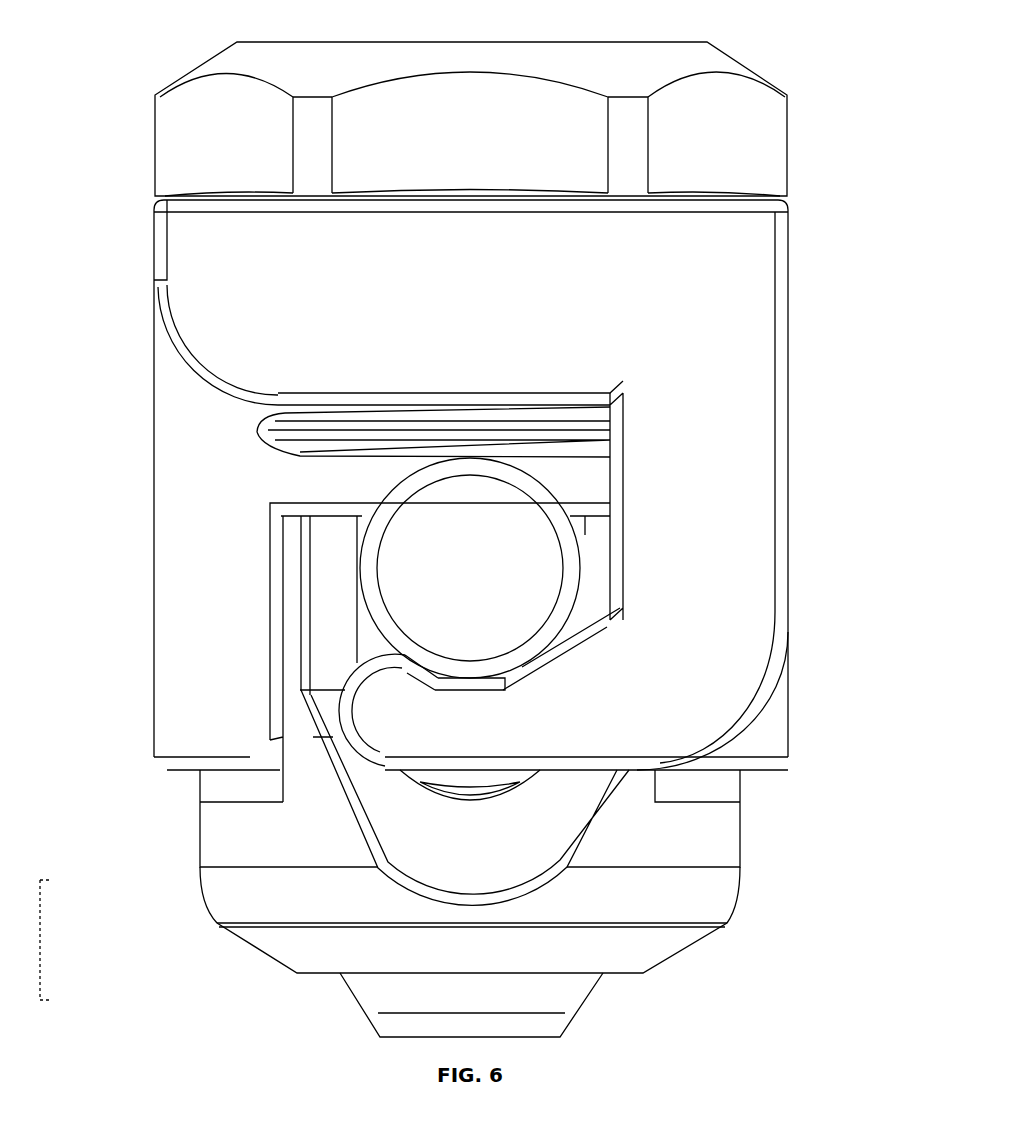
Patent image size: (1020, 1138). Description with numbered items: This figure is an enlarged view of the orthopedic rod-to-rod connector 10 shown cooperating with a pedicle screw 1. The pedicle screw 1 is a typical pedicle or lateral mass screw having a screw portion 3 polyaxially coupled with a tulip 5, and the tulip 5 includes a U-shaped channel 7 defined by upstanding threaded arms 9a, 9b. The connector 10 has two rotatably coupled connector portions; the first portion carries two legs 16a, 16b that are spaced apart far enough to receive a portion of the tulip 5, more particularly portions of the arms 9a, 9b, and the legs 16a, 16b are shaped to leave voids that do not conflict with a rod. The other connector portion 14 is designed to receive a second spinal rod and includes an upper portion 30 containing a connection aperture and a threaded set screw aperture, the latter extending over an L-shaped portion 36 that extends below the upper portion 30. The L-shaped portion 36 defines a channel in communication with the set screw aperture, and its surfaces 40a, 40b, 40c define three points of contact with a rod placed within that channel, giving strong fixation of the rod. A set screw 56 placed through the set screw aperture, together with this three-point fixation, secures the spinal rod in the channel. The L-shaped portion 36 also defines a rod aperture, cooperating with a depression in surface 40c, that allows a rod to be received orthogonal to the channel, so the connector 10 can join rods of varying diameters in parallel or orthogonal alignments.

The pedicle screw 1 is at (32, 948).
The screw portion 3 is at (450, 997).
The tulip 5 is at (238, 890).
The U-shaped channel 7 is at (455, 820).
The upstanding threaded arm 9a is at (333, 551).
The upstanding threaded arm 9b is at (583, 570).
The orthopedic rod-to-rod connector 10 is at (803, 224).
The connector portion 14 is at (388, 302).
The leg 16a is at (289, 752).
The leg 16b is at (767, 735).
The upper portion 30 is at (471, 152).
The L-shaped portion 36 is at (712, 491).
The surface 40a is at (470, 458).
The surface 40b is at (520, 667).
The surface 40c is at (403, 655).
The set screw 56 is at (560, 430).